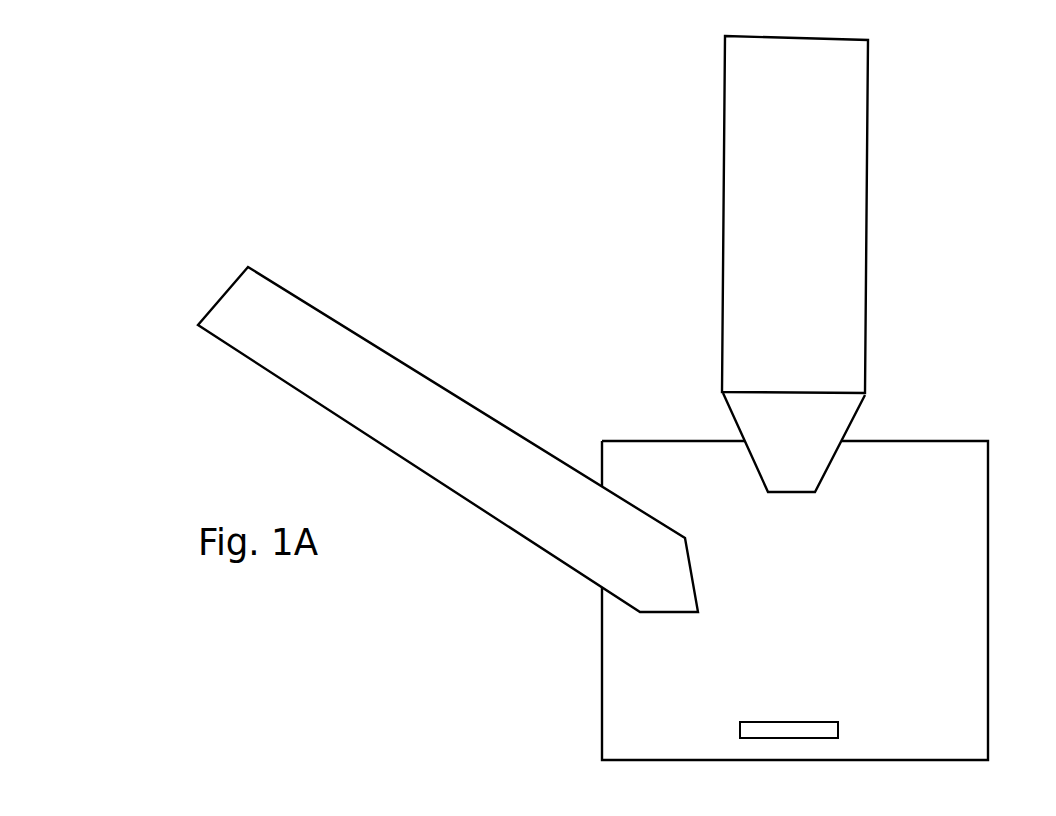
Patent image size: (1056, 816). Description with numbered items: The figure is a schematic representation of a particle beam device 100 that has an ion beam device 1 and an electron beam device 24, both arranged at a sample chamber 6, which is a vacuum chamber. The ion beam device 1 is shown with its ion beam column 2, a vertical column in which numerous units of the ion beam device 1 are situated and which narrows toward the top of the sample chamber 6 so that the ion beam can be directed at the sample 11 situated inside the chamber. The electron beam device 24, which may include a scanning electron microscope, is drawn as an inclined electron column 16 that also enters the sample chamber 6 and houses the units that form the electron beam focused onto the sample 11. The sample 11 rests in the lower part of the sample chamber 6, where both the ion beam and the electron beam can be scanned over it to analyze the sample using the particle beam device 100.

The particle beam device 100 is at (517, 128).
The ion beam device 1 is at (945, 106).
The ion beam column 2 is at (868, 170).
The sample chamber 6 is at (988, 615).
The electron column 16 is at (303, 298).
The electron beam device 24 is at (443, 291).
The sample 11 is at (820, 730).